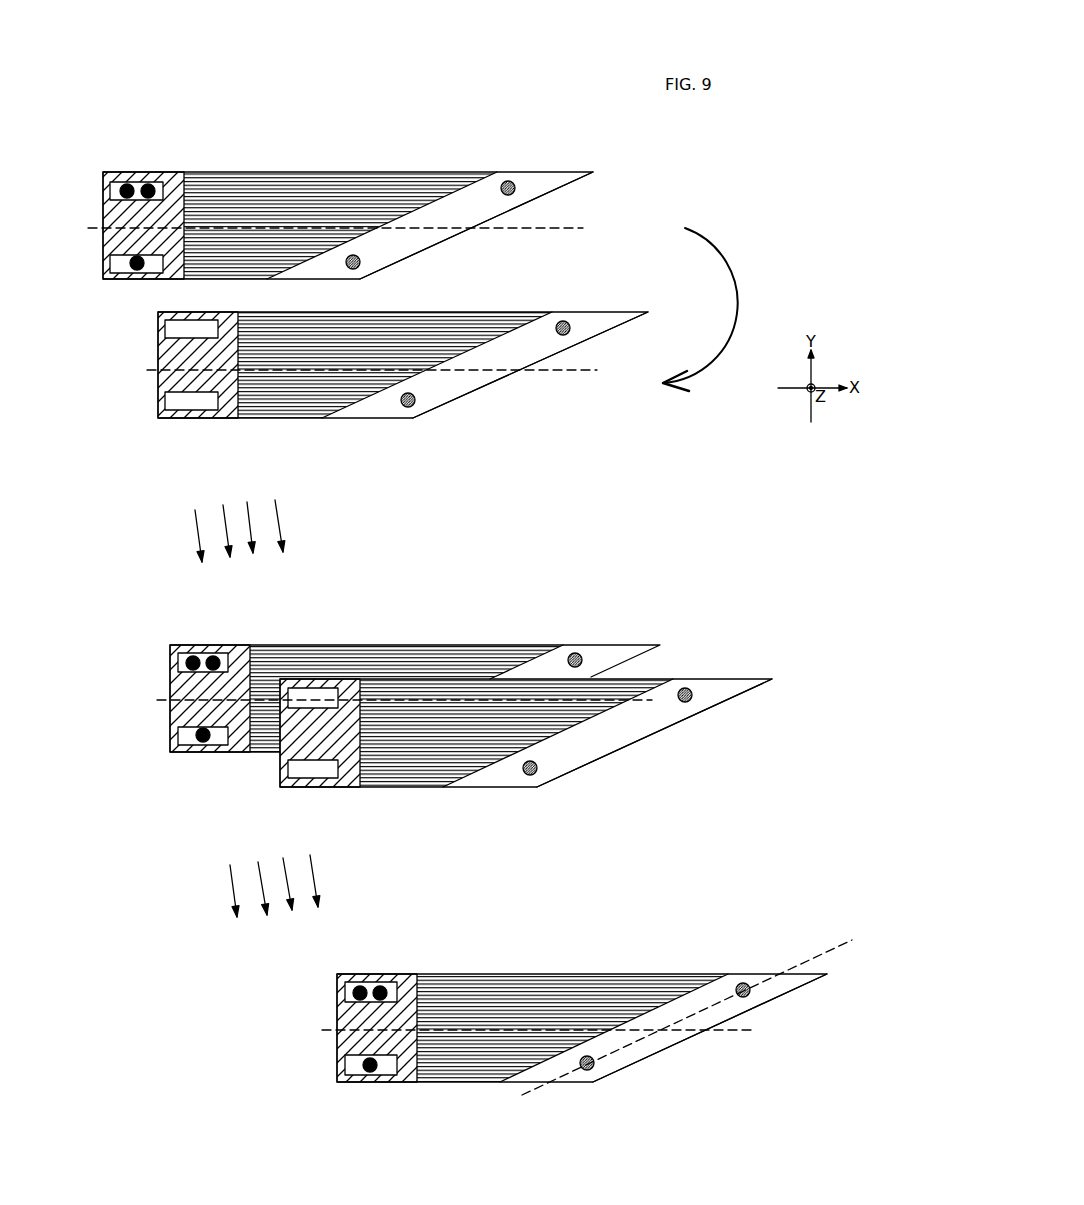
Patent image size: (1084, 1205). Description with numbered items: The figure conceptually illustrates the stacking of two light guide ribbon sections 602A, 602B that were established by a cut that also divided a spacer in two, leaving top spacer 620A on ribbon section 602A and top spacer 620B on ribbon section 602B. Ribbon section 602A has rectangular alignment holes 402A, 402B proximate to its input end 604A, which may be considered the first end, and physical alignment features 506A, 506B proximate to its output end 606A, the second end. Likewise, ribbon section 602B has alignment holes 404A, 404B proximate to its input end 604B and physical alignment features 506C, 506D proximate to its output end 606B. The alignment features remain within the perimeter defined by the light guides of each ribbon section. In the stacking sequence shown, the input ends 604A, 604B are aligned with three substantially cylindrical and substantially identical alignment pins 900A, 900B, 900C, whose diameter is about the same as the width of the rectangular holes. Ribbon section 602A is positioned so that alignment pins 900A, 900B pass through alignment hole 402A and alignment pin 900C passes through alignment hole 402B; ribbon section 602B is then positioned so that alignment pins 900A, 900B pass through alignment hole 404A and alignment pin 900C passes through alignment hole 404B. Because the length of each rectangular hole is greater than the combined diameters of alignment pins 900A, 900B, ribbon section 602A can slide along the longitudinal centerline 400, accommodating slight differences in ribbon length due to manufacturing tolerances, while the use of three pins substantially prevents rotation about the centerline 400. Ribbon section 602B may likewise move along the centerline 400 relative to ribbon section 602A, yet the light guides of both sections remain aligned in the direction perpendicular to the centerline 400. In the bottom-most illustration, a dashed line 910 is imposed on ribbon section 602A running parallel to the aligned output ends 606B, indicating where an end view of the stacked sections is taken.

The longitudinal centerline 400 is at (438, 627).
The alignment hole 402A is at (115, 188).
The alignment hole 402B is at (117, 263).
The alignment hole 404A is at (172, 397).
The alignment hole 404B is at (172, 332).
The physical alignment feature 506A is at (358, 265).
The physical alignment feature 506B is at (506, 182).
The physical alignment feature 506C is at (413, 403).
The physical alignment feature 506D is at (568, 332).
The ribbon section 602A is at (313, 172).
The ribbon section 602B is at (293, 422).
The input end 604A is at (117, 220).
The input end 604B is at (227, 412).
The output end 606A is at (452, 240).
The output end 606B is at (503, 373).
The top spacer 620A is at (553, 182).
The top spacer 620B is at (612, 323).
The alignment pin 900A is at (118, 186).
The alignment pin 900B is at (145, 186).
The alignment pin 900C is at (132, 270).
The dashed line 910 is at (820, 955).